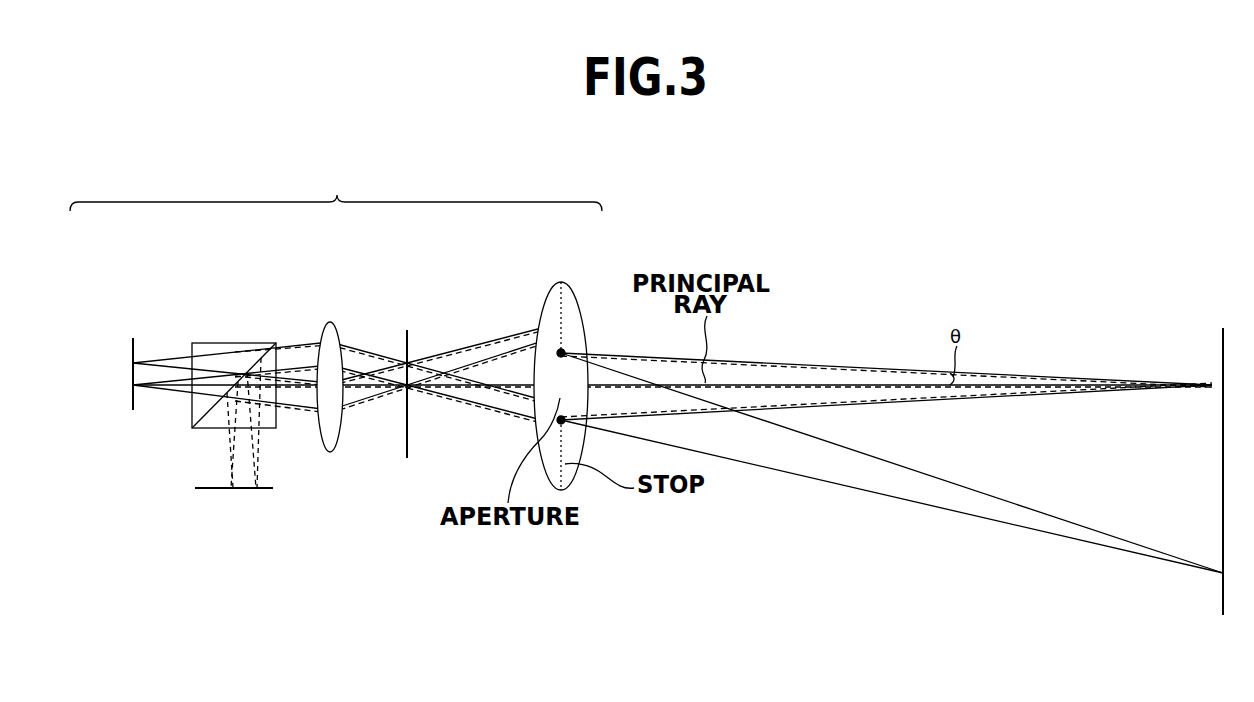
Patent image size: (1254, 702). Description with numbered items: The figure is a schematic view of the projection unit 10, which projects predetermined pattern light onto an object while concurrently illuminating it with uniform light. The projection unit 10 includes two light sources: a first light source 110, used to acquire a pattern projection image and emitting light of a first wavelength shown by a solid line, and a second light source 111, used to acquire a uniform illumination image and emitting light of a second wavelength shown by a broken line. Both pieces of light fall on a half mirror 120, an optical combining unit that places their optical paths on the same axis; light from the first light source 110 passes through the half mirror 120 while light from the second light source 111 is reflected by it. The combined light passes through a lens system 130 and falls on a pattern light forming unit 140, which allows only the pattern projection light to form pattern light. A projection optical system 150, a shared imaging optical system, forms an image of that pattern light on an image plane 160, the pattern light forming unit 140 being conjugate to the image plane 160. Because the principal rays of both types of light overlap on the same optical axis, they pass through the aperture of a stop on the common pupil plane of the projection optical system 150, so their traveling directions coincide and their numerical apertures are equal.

The projection unit 10 is at (336, 187).
The first light source 110 is at (128, 377).
The second light source 111 is at (213, 490).
The half mirror 120 is at (236, 343).
The lens system 130 is at (330, 322).
The pattern light forming unit 140 is at (407, 330).
The projection optical system 150 is at (551, 283).
The image plane 160 is at (1222, 350).